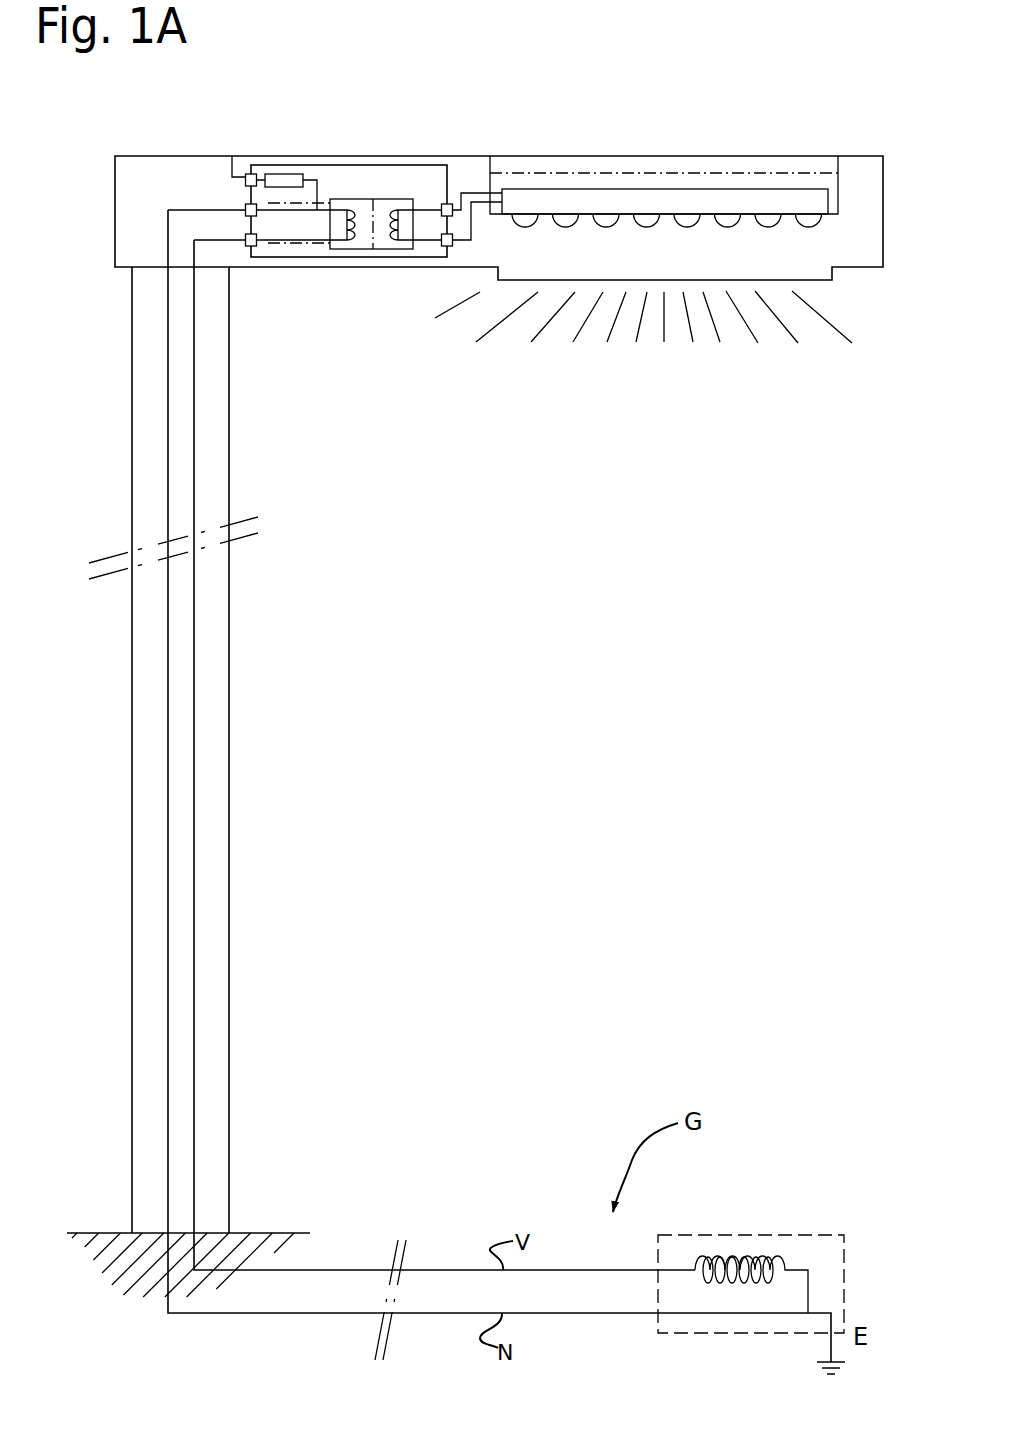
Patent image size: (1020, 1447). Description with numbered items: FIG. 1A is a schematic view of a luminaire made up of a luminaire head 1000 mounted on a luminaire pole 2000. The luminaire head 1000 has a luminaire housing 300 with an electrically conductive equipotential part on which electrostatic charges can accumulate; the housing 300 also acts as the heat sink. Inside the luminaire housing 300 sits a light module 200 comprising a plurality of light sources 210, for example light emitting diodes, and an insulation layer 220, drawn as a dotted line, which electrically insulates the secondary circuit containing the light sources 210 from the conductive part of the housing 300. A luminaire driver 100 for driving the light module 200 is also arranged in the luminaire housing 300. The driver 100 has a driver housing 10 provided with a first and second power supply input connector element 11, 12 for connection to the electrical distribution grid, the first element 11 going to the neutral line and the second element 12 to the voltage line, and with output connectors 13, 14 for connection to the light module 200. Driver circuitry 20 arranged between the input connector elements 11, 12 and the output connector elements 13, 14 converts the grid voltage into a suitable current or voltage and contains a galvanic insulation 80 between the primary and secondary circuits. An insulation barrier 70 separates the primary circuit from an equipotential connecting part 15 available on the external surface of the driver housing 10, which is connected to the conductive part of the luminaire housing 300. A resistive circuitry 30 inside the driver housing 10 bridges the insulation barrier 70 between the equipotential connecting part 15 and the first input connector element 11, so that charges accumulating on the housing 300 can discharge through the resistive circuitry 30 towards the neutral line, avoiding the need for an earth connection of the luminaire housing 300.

The driver housing 10 is at (330, 258).
The first power supply input connector element 11 is at (245, 209).
The second power supply input connector element 12 is at (248, 242).
The output connector element 13 is at (446, 207).
The output connector element 14 is at (450, 248).
The equipotential connecting part 15 is at (245, 180).
The driver circuitry 20 is at (383, 250).
The resistive circuitry 30 is at (281, 178).
The insulation barrier 70 is at (305, 204).
The galvanic insulation 80 is at (374, 204).
The luminaire driver 100 is at (342, 158).
The light module 200 is at (665, 150).
The light sources 210 is at (770, 218).
The insulation layer 220 is at (592, 172).
The luminaire housing 300 is at (438, 150).
The luminaire head 1000 is at (673, 306).
The luminaire pole 2000 is at (229, 642).